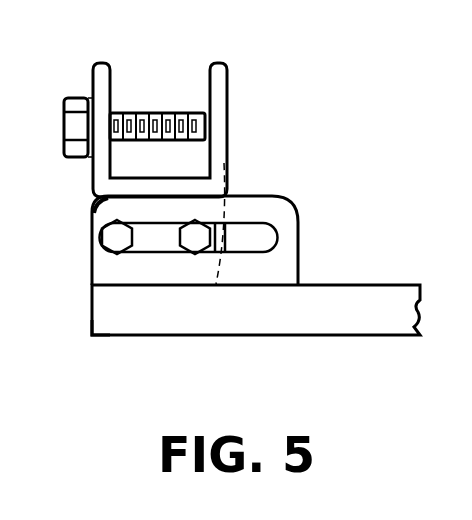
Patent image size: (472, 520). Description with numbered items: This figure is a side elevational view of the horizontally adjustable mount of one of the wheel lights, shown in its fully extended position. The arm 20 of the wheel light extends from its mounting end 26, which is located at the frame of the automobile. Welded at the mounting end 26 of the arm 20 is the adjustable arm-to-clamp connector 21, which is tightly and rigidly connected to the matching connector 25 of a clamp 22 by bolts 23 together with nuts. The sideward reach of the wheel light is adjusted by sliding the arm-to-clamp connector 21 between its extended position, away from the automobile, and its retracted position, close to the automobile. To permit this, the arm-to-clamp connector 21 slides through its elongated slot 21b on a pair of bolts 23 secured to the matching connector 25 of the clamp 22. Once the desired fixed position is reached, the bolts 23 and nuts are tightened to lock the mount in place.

The arm 20 is at (353, 320).
The arm-to-clamp connector 21 is at (275, 222).
The elongated slot 21b is at (247, 235).
The clamp 22 is at (223, 62).
The bolts 23 is at (123, 247).
The matching connector 25 is at (98, 205).
The mounting end 26 is at (87, 330).